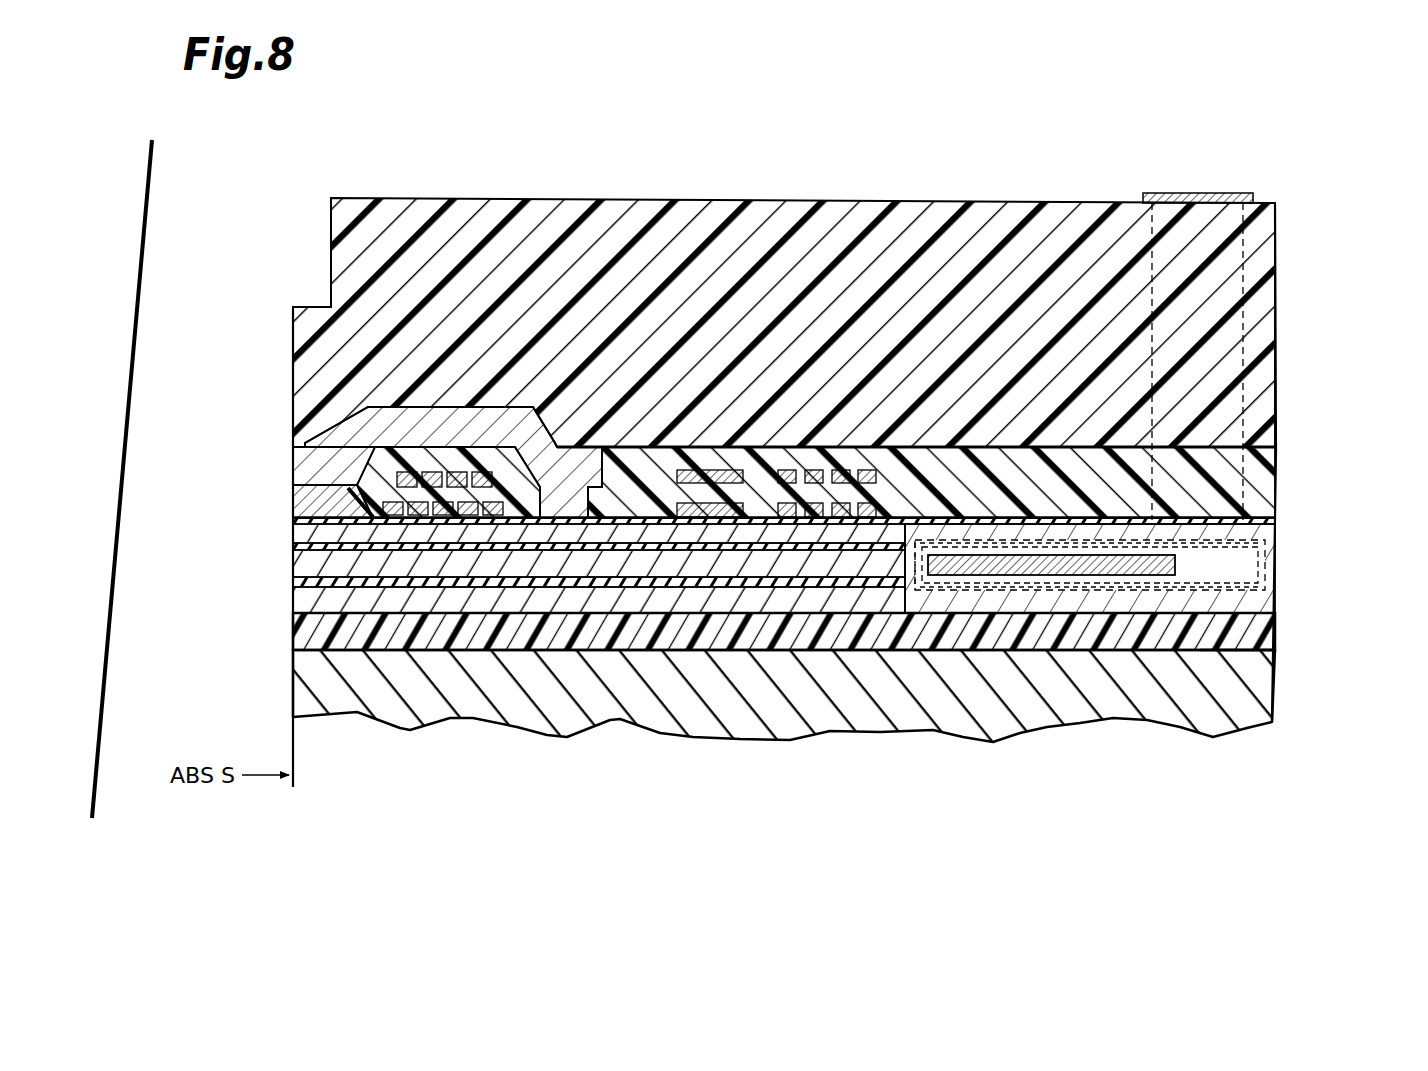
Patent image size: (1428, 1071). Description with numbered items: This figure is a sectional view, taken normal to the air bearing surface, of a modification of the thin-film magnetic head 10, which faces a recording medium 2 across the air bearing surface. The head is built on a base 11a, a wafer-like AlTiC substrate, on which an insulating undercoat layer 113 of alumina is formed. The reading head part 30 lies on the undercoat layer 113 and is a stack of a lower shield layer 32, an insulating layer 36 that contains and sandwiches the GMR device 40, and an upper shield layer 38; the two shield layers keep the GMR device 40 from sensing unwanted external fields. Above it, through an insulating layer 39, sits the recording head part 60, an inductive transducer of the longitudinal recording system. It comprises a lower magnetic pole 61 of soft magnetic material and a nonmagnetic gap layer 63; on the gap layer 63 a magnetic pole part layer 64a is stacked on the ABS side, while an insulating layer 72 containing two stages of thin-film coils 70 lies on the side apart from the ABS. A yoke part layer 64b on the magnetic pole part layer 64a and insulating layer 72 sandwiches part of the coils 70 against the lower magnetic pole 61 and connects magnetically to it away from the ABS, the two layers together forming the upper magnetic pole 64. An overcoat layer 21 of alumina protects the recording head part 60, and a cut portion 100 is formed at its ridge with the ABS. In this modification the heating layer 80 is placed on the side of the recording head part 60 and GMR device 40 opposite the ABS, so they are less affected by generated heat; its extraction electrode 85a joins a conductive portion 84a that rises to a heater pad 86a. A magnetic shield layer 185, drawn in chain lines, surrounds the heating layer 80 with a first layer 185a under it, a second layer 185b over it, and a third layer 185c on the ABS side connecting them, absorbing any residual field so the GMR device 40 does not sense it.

The recording medium (magnetic disk) 2 is at (145, 222).
The thin-film magnetic head 10 is at (135, 233).
The overcoat layer 21 is at (467, 212).
The cut portion 100 is at (331, 255).
The heater pad 86a is at (1211, 192).
The conductive portion 84a is at (1243, 250).
The insulating layer 72 is at (402, 447).
The thin-film coils 70 is at (395, 500).
The gap layer 63 is at (305, 516).
The yoke part layer 64b is at (395, 480).
The magnetic pole part layer 64a is at (385, 510).
The upper magnetic pole 64 is at (222, 413).
The recording head part 60 is at (186, 310).
The lower magnetic pole 61 is at (300, 533).
The upper shield layer 38 is at (300, 560).
The insulating layer 39 is at (300, 549).
The GMR device 40 is at (300, 584).
The insulating layer 36 is at (300, 603).
The reading head part 30 is at (222, 550).
The lower shield layer 32 is at (300, 630).
The undercoat layer 113 is at (1268, 632).
The base 11a is at (305, 706).
The shield layer 185 is at (1135, 518).
The extraction electrode 85a is at (1268, 569).
The second layer 185b is at (1035, 548).
The first layer 185a is at (1035, 588).
The third layer 185c is at (930, 598).
The heating layer 80 is at (1262, 598).